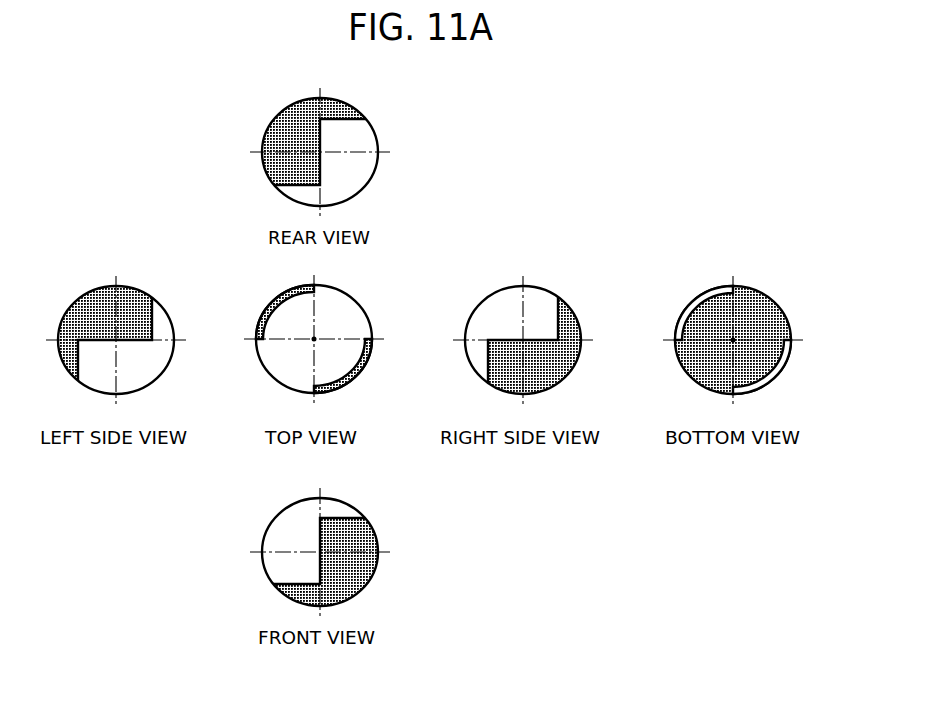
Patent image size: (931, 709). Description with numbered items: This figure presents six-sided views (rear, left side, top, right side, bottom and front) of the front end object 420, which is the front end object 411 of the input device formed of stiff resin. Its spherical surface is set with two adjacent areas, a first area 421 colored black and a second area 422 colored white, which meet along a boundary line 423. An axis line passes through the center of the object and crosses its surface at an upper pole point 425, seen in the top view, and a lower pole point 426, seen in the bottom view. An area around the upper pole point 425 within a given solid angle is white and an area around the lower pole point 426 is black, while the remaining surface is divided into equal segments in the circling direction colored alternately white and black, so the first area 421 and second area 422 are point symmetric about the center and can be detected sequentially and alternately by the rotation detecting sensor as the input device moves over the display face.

The front end object 420 is at (290, 328).
The front end object 411 is at (263, 297).
The first area 421 is at (293, 112).
The second area 422 is at (354, 179).
The boundary line 423 is at (330, 517).
The upper pole point 425 is at (314, 339).
The lower pole point 426 is at (733, 340).